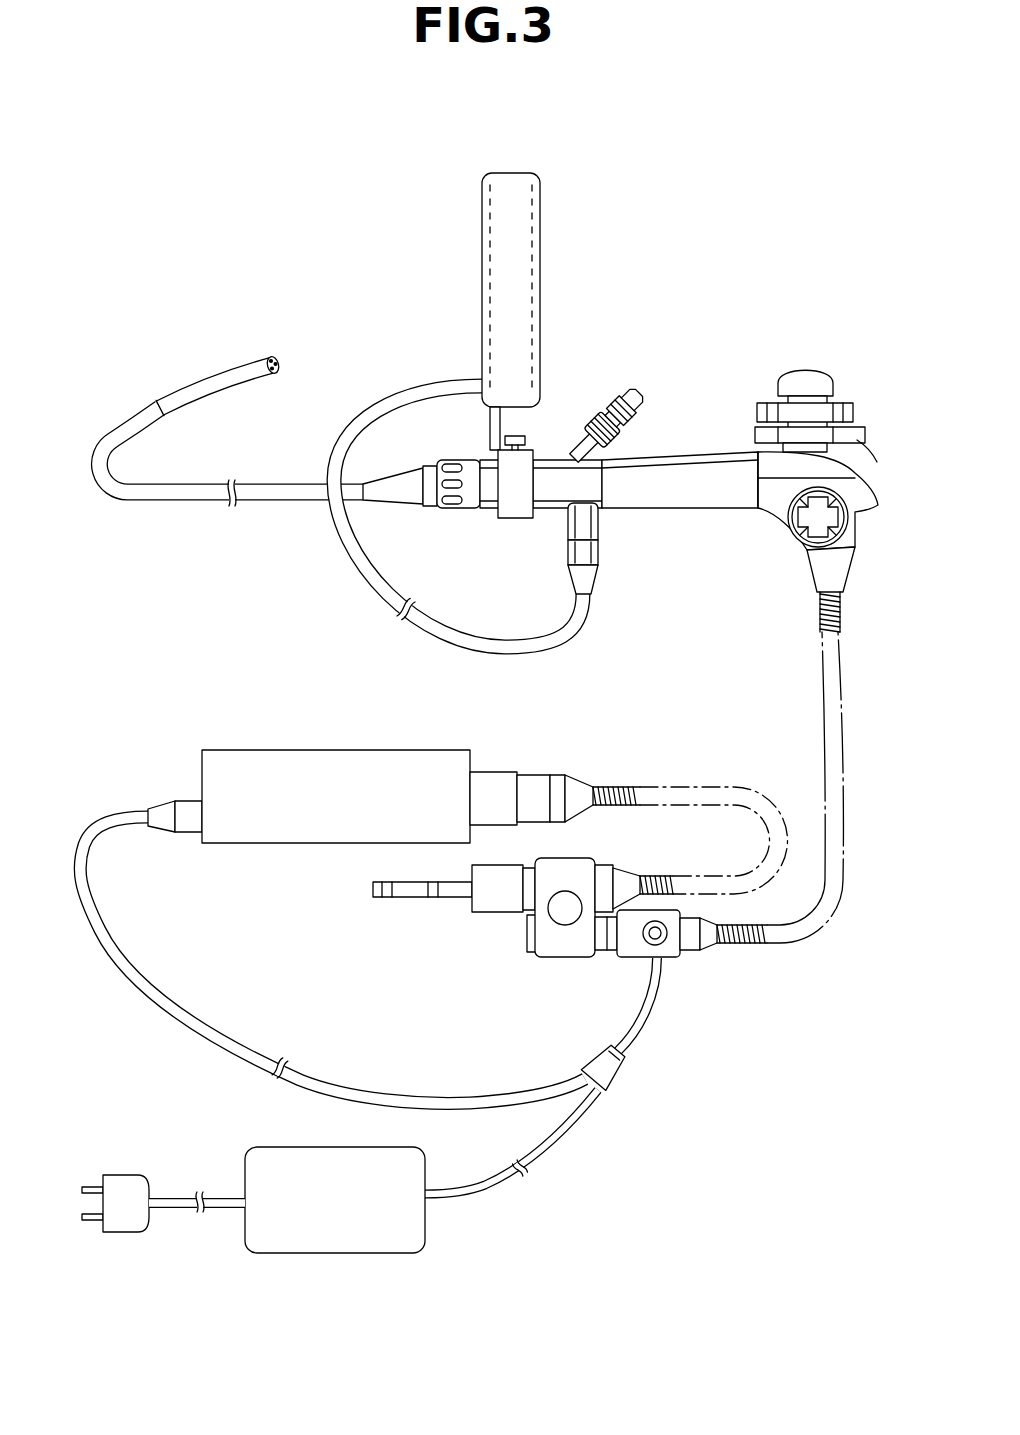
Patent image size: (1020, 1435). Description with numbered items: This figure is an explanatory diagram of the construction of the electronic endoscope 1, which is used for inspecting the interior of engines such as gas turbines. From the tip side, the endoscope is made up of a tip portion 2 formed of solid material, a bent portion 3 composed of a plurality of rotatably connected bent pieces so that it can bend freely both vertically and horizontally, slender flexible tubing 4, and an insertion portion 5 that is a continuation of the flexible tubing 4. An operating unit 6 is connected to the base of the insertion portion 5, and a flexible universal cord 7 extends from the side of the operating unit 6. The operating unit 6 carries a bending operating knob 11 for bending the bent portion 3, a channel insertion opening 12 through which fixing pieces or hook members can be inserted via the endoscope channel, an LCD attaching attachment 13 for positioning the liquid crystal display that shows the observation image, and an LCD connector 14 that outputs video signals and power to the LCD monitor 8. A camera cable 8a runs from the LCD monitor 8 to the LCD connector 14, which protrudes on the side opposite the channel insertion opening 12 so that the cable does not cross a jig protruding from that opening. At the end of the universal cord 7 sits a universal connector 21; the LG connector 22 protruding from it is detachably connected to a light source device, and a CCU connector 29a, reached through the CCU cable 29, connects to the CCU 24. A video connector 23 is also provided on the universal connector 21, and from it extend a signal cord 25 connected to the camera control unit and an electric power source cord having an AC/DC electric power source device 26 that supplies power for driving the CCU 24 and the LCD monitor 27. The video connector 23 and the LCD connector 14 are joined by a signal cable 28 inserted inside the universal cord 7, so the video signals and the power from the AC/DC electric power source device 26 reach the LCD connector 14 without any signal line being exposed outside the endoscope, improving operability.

The electronic endoscope 1 is at (340, 196).
The tip portion 2 is at (268, 354).
The bent portion 3 is at (200, 380).
The flexible tubing 4 is at (198, 485).
The insertion portion 5 is at (278, 433).
The operating unit 6 is at (711, 435).
The universal cord 7 is at (822, 680).
The LCD monitor 8 is at (497, 255).
The camera cable 8a is at (362, 580).
The bending operating knob 11 is at (806, 398).
The channel insertion opening 12 is at (614, 398).
The LCD attaching attachment 13 is at (522, 468).
The LCD connector 14 is at (592, 524).
The universal connector 21 is at (508, 926).
The LG connector 22 is at (408, 890).
The video connector 23 is at (662, 945).
The CCU 24 is at (287, 772).
The signal cord 25 is at (236, 1028).
The AC/DC electric power source device 26 is at (260, 1162).
The LCD monitor 27 is at (586, 1128).
The signal cable 28 is at (825, 740).
The CCU cable 29 is at (660, 778).
The CCU connector 29a is at (497, 784).